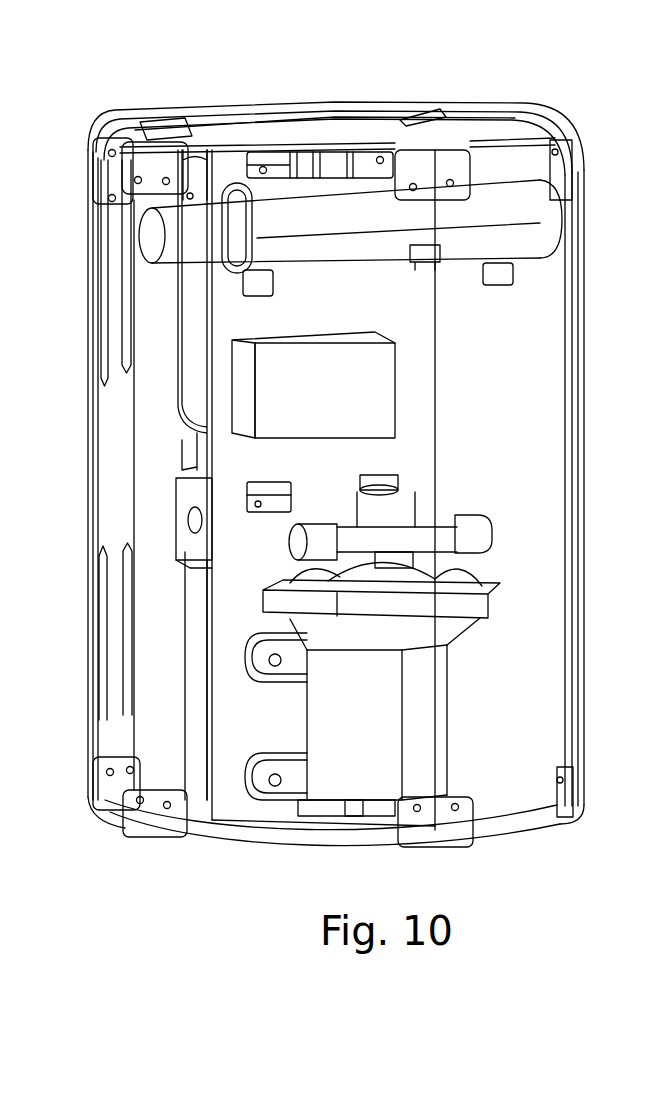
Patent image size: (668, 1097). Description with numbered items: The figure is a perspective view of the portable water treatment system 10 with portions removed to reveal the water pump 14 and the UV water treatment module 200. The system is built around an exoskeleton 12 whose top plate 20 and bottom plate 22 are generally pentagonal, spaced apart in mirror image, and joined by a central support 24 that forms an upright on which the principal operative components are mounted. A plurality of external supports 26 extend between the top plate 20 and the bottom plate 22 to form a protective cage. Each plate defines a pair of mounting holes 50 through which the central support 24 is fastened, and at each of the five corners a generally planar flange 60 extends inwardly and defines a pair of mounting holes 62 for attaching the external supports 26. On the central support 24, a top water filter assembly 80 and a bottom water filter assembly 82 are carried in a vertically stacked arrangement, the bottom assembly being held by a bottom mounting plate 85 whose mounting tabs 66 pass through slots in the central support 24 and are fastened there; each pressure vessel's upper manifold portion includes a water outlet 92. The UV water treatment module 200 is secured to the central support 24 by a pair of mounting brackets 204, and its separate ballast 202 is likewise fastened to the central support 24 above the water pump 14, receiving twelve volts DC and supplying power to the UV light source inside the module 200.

The portable water treatment system 10 is at (626, 135).
The exoskeleton 12 is at (586, 272).
The water pump 14 is at (446, 690).
The top plate 20 is at (372, 110).
The bottom plate 22 is at (312, 846).
The central support 24 is at (436, 351).
The external supports 26 is at (100, 501).
The mounting holes 50 is at (262, 128).
The flange 60 is at (97, 133).
The mounting holes 62 is at (136, 179).
The mounting tabs 66 is at (250, 168).
The top water filter assembly 80 is at (180, 368).
The bottom water filter assembly 82 is at (185, 619).
The bottom mounting plate 85 is at (180, 456).
The water outlet 92 is at (186, 197).
The UV water treatment module 200 is at (343, 272).
The ballast 202 is at (396, 394).
The mounting brackets 204 is at (263, 186).